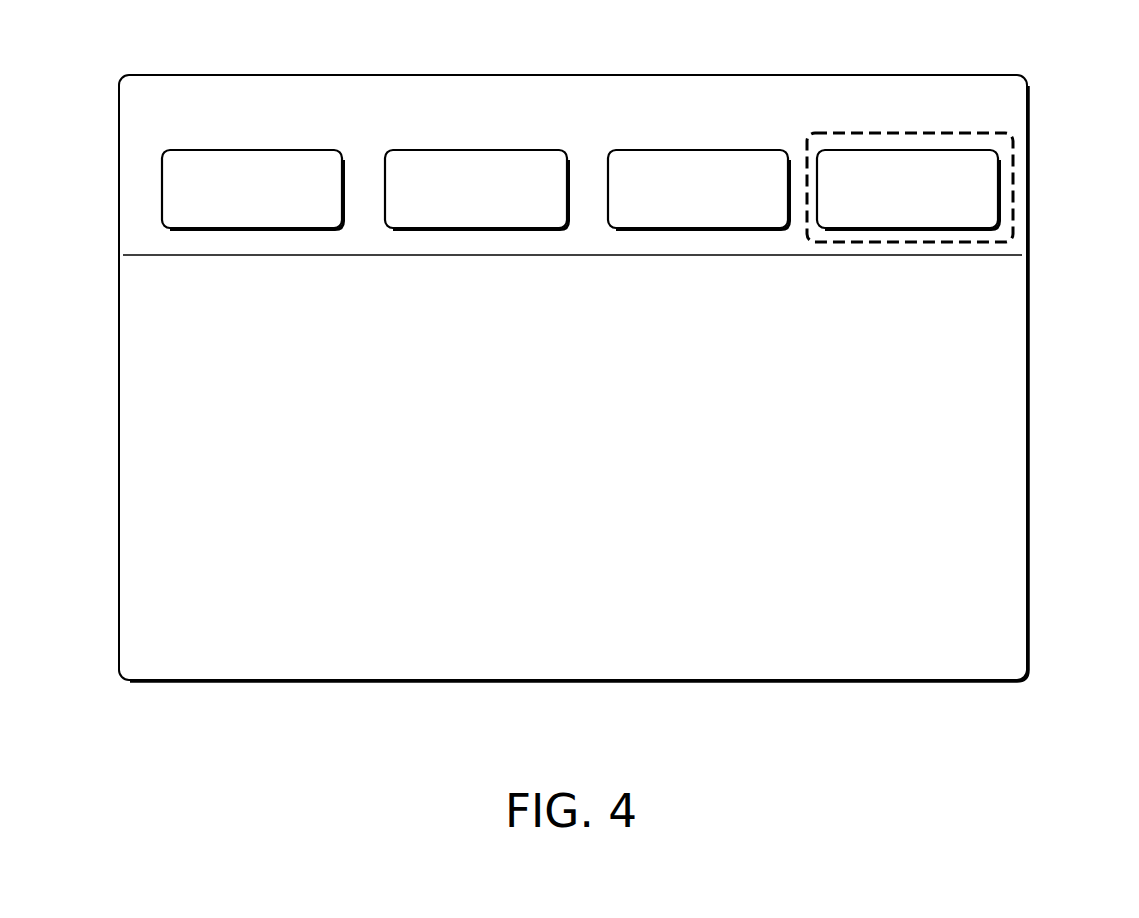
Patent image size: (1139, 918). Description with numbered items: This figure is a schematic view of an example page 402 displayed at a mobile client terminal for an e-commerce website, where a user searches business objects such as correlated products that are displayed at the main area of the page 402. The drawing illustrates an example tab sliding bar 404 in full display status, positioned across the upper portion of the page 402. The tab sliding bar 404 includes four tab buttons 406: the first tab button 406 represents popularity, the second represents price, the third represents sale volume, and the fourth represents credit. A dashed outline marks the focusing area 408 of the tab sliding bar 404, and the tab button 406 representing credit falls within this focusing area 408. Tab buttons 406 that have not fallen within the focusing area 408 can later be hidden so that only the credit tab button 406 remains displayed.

The page 402 is at (794, 74).
The tab sliding bar 404 is at (996, 99).
The tab button 406 is at (279, 210).
The focusing area 408 is at (1015, 180).